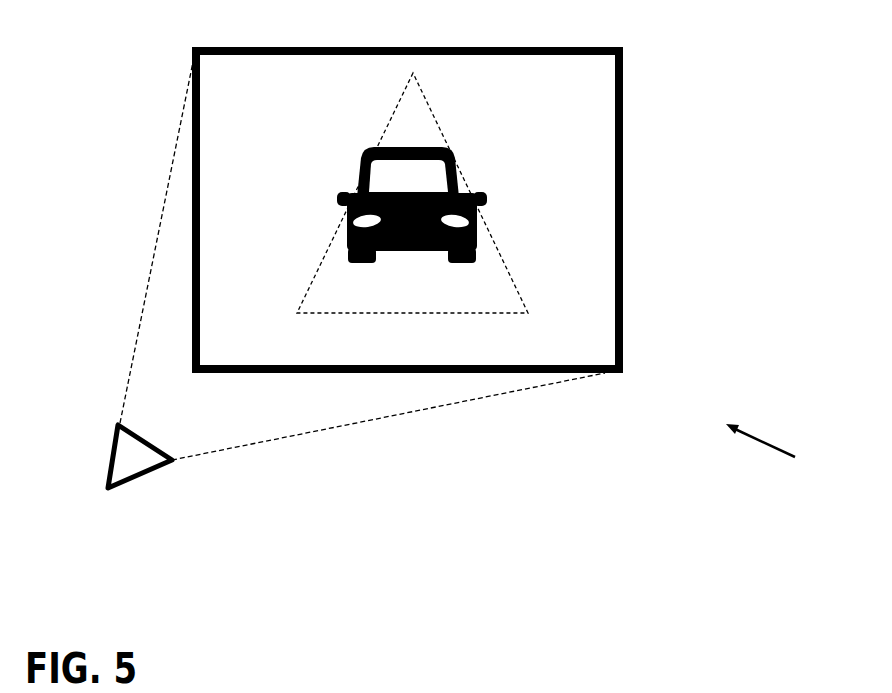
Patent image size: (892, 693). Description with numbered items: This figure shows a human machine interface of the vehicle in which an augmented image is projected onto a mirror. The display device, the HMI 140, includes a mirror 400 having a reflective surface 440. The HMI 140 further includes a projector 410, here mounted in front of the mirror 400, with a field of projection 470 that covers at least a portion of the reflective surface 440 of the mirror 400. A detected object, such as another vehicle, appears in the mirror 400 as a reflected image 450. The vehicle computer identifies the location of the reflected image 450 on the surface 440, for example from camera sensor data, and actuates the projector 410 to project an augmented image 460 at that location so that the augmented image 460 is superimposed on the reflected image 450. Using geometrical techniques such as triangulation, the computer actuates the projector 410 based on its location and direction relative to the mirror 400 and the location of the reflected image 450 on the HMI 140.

The mirror 400 is at (623, 100).
The reflective surface 440 is at (578, 193).
The augmented image 460 is at (443, 135).
The reflected image 450 is at (343, 257).
The field of projection 470 is at (368, 420).
The projector 410 is at (153, 472).
The human machine interface (HMI) 140 is at (788, 451).